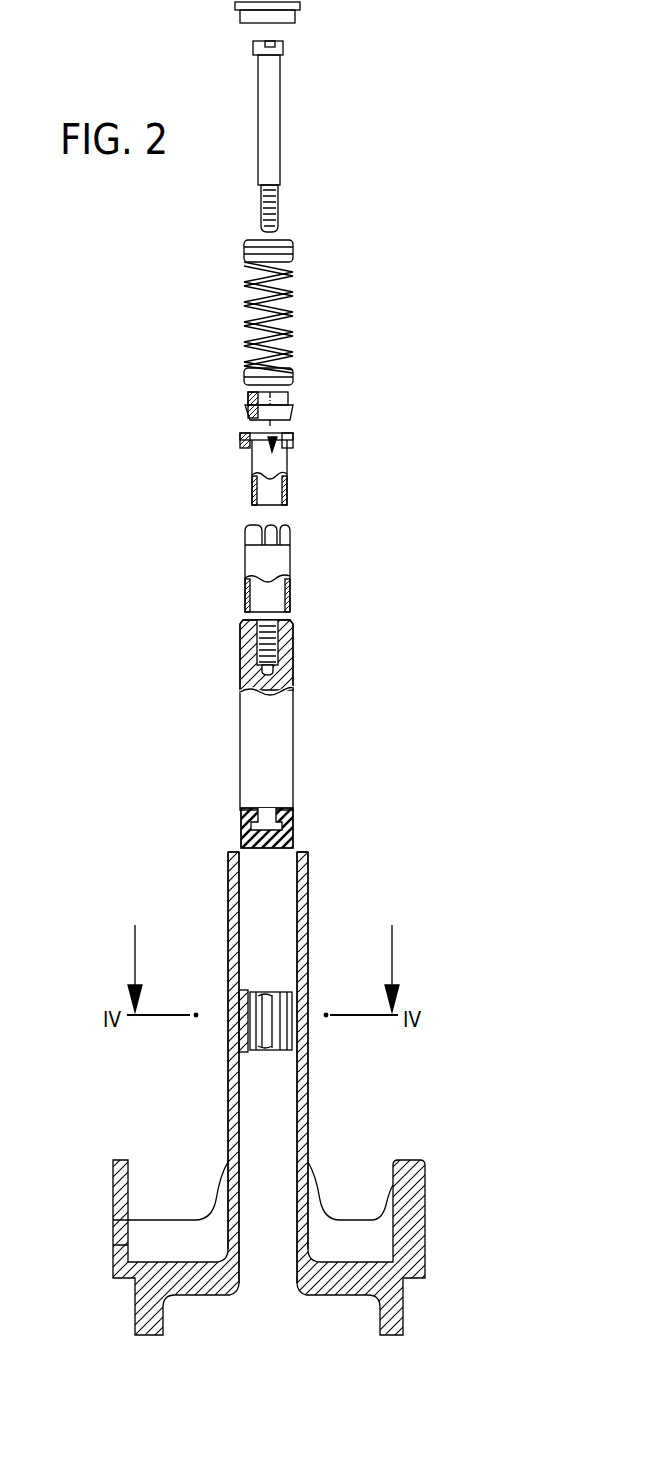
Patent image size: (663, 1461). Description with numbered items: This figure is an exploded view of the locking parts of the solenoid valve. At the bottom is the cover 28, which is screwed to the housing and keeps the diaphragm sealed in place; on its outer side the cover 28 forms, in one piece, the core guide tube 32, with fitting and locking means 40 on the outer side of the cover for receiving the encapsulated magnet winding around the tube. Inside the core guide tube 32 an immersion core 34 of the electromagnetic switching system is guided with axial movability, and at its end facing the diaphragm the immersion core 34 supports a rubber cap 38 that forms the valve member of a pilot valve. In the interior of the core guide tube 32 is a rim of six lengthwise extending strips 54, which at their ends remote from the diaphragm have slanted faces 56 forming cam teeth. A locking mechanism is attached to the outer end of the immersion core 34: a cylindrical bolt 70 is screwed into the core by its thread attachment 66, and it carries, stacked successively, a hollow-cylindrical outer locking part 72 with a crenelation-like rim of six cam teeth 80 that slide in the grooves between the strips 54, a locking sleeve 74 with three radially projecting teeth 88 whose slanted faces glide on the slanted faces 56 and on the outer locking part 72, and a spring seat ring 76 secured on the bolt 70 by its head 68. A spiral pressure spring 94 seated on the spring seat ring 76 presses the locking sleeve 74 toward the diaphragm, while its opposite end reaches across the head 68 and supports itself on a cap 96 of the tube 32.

The cap 96 is at (290, 17).
The head 68 is at (285, 48).
The cylindrical bolt 70 is at (272, 125).
The thread attachment 66 is at (280, 208).
The spiral pressure spring 94 is at (295, 300).
The spring seat ring 76 is at (282, 400).
The locking sleeve 74 is at (270, 469).
The teeth 88 is at (263, 441).
The outer locking part 72 is at (270, 568).
The cam teeth 80 is at (252, 546).
The immersion core 34 is at (282, 735).
The rubber cap 38 is at (295, 832).
The core guide tube 32 is at (309, 893).
The slanted faces 56 is at (283, 990).
The strips 54 is at (256, 1042).
The fitting and locking means 40 is at (408, 1183).
The cover 28 is at (365, 1262).